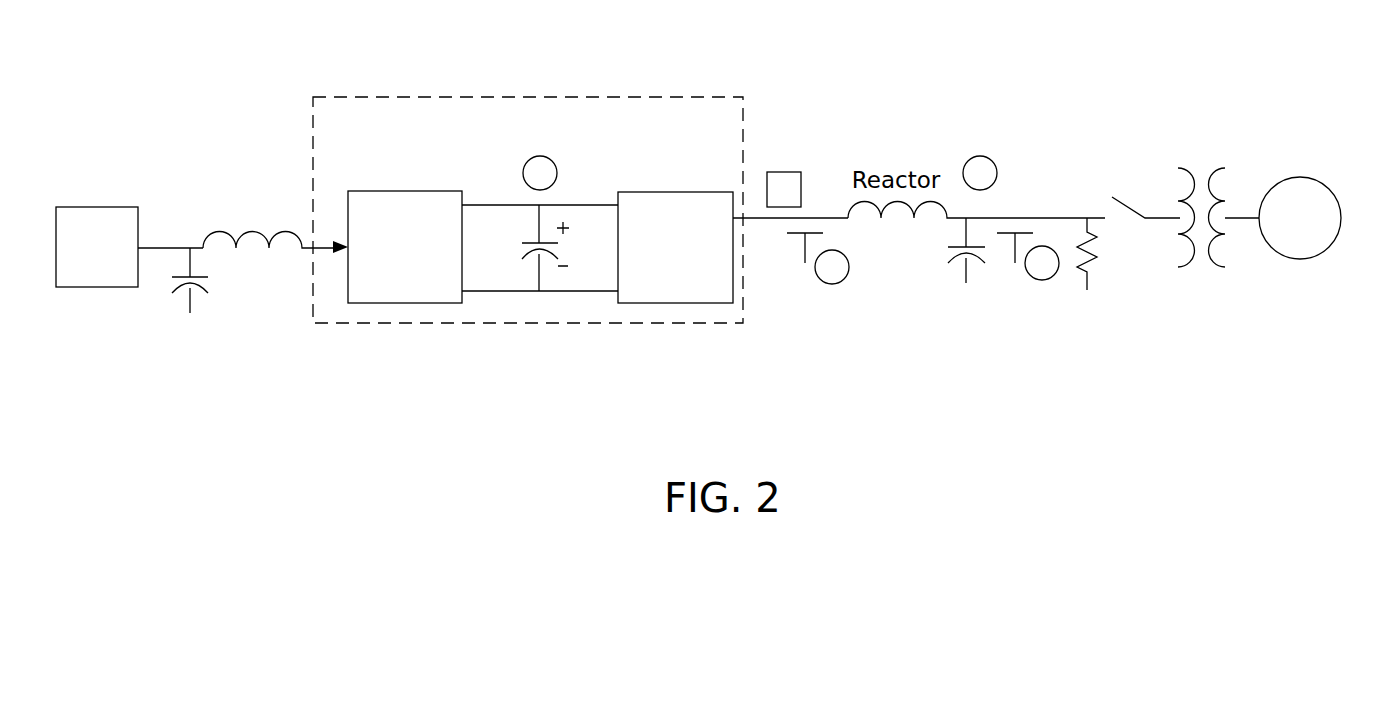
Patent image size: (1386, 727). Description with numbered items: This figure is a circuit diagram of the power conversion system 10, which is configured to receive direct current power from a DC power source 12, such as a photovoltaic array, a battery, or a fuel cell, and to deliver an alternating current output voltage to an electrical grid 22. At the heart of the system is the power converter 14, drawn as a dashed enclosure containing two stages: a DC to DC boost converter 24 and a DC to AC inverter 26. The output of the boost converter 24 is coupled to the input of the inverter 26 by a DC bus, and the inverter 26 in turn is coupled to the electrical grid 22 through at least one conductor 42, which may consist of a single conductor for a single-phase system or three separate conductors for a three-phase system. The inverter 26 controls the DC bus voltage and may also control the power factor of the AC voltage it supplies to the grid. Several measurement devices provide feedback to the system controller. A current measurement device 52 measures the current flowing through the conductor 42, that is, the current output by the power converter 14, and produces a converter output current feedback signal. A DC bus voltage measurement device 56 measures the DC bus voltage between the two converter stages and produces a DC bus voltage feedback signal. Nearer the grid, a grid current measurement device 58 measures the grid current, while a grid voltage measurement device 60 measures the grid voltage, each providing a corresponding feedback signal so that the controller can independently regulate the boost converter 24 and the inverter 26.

The power conversion system 10 is at (1004, 38).
The DC power source 12 is at (118, 207).
The power converter 14 is at (743, 123).
The electrical grid 22 is at (1300, 177).
The DC to DC boost converter 24 is at (428, 191).
The DC to AC inverter 26 is at (704, 192).
The conductor 42 is at (823, 218).
The current measurement device 52 is at (829, 284).
The DC bus voltage measurement device 56 is at (545, 157).
The grid current measurement device 58 is at (1040, 280).
The grid voltage measurement device 60 is at (985, 157).